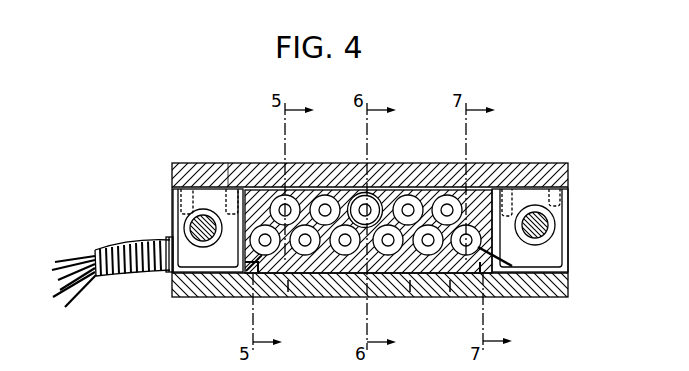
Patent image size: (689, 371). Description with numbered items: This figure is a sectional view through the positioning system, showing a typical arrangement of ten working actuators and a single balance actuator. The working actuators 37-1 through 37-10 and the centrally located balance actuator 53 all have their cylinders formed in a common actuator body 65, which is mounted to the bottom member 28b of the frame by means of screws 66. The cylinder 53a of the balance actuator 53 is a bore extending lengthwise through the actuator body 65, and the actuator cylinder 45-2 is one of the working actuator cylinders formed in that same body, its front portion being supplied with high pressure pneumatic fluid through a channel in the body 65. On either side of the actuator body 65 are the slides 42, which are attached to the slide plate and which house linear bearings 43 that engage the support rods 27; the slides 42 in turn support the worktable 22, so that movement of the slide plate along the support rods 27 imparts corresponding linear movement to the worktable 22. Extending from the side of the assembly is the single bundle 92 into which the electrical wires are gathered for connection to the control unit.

The worktable 22 is at (482, 168).
The support rods 27 is at (549, 227).
The bottom member 28b is at (340, 297).
The working actuator 37-1 is at (243, 261).
The working actuator 37-10 is at (515, 278).
The slides 42 is at (192, 257).
The linear bearings 43 is at (549, 214).
The actuator cylinder 45-2 is at (279, 198).
The balance actuator 53 is at (383, 193).
The cylinder 53a is at (353, 194).
The actuator body 65 is at (410, 297).
The screws 66 is at (288, 297).
The bundle 92 is at (129, 241).